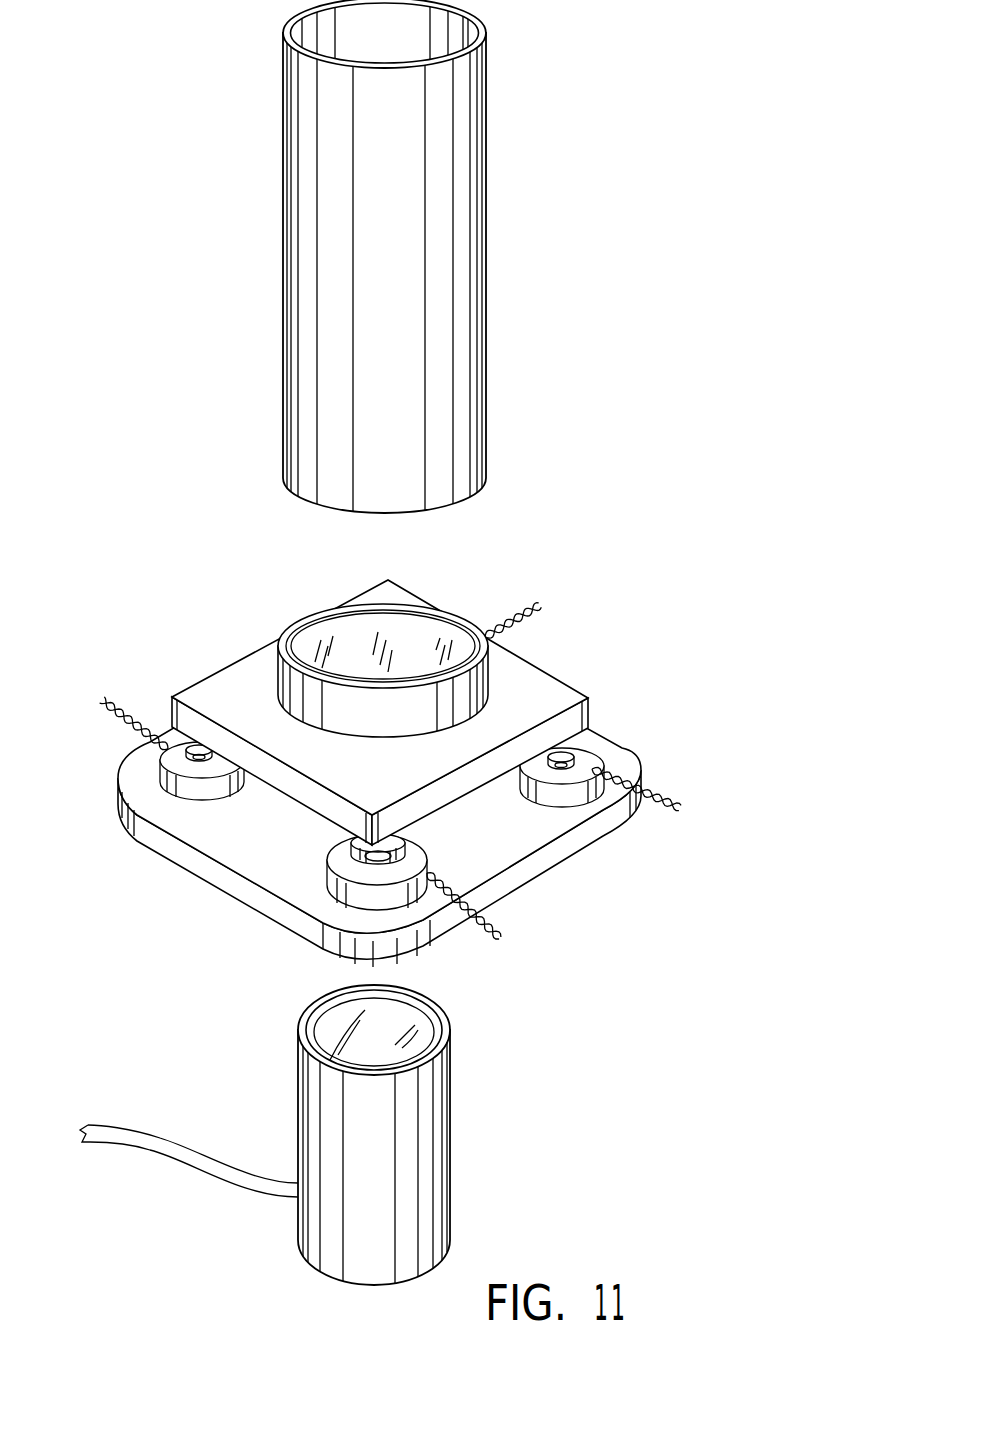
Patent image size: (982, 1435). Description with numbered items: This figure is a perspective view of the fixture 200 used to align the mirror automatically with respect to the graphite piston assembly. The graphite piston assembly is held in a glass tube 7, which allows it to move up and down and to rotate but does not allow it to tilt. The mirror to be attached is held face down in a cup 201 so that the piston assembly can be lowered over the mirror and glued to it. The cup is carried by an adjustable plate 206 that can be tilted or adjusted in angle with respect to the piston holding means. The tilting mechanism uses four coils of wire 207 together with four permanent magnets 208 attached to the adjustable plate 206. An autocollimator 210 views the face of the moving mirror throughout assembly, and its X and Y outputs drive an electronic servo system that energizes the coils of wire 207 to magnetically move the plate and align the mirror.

The glass tube 7 is at (284, 198).
The fixture 200 is at (616, 740).
The cup 201 is at (277, 669).
The adjustable plate 206 is at (552, 683).
The coils of wire 207 is at (323, 882).
The permanent magnets 208 is at (577, 750).
The autocollimator 210 is at (298, 1093).